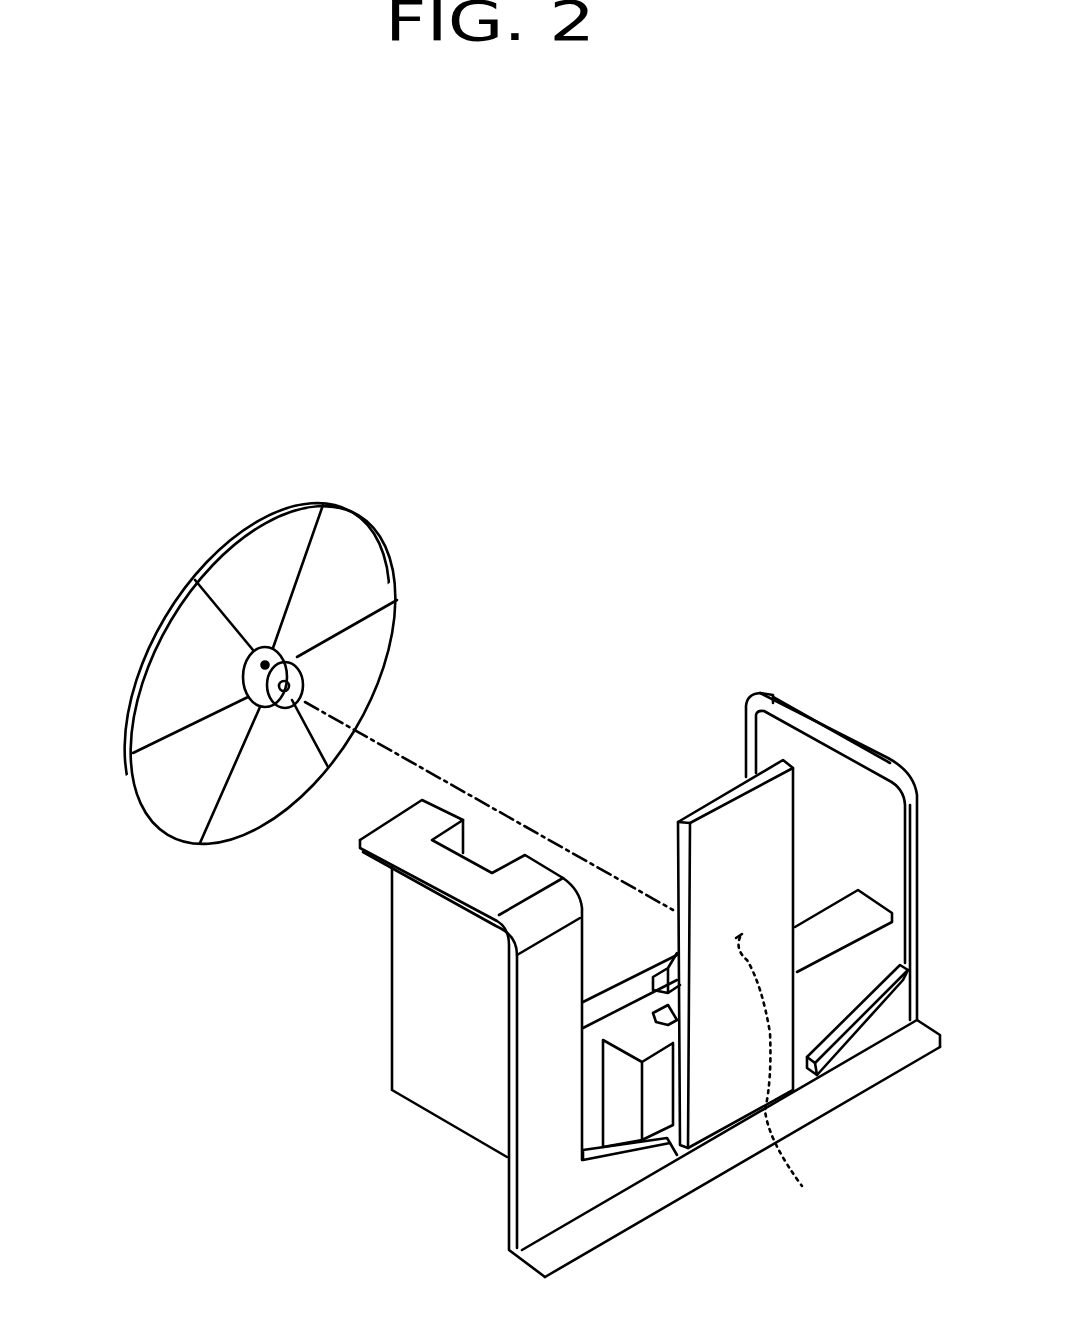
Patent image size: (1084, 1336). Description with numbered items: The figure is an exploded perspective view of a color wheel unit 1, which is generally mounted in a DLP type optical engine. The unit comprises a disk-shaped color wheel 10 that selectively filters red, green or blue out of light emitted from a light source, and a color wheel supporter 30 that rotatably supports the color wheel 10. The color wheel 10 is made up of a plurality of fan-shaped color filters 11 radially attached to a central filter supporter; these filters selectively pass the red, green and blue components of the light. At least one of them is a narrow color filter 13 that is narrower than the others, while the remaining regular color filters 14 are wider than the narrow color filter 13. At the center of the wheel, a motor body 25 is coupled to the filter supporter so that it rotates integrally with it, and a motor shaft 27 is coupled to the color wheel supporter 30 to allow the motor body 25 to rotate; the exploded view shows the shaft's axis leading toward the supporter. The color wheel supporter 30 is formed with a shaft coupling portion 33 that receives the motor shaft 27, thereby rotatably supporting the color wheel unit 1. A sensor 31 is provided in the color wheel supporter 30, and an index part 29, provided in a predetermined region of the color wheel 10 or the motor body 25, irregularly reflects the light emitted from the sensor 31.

The color wheel unit 1 is at (877, 556).
The color wheel 10 is at (515, 513).
The color filters 11 is at (358, 403).
The narrow color filter 13 is at (278, 531).
The regular color filters 14 is at (356, 531).
The motor body 25 is at (243, 690).
The motor shaft 27 is at (285, 694).
The index part 29 is at (258, 650).
The color wheel supporter 30 is at (833, 650).
The sensor 31 is at (700, 1050).
The shaft coupling portion 33 is at (789, 1073).